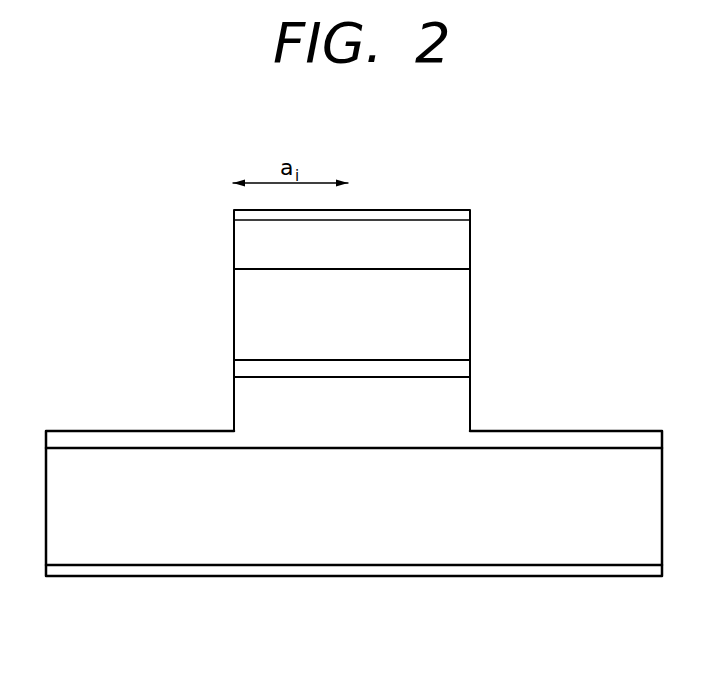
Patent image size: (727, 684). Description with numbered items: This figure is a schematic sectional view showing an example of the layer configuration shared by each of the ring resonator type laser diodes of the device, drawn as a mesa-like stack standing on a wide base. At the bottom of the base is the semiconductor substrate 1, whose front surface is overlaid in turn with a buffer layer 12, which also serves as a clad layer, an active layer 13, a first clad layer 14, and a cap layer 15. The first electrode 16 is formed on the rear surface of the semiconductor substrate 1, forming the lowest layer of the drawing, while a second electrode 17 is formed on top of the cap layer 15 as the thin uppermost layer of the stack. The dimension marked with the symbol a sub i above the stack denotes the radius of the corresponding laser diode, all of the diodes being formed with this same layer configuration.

The semiconductor substrate 1 is at (563, 555).
The buffer layer 12 is at (590, 439).
The active layer 13 is at (458, 371).
The first clad layer 14 is at (245, 320).
The cap layer 15 is at (458, 250).
The first electrode 16 is at (402, 572).
The second electrode 17 is at (430, 210).